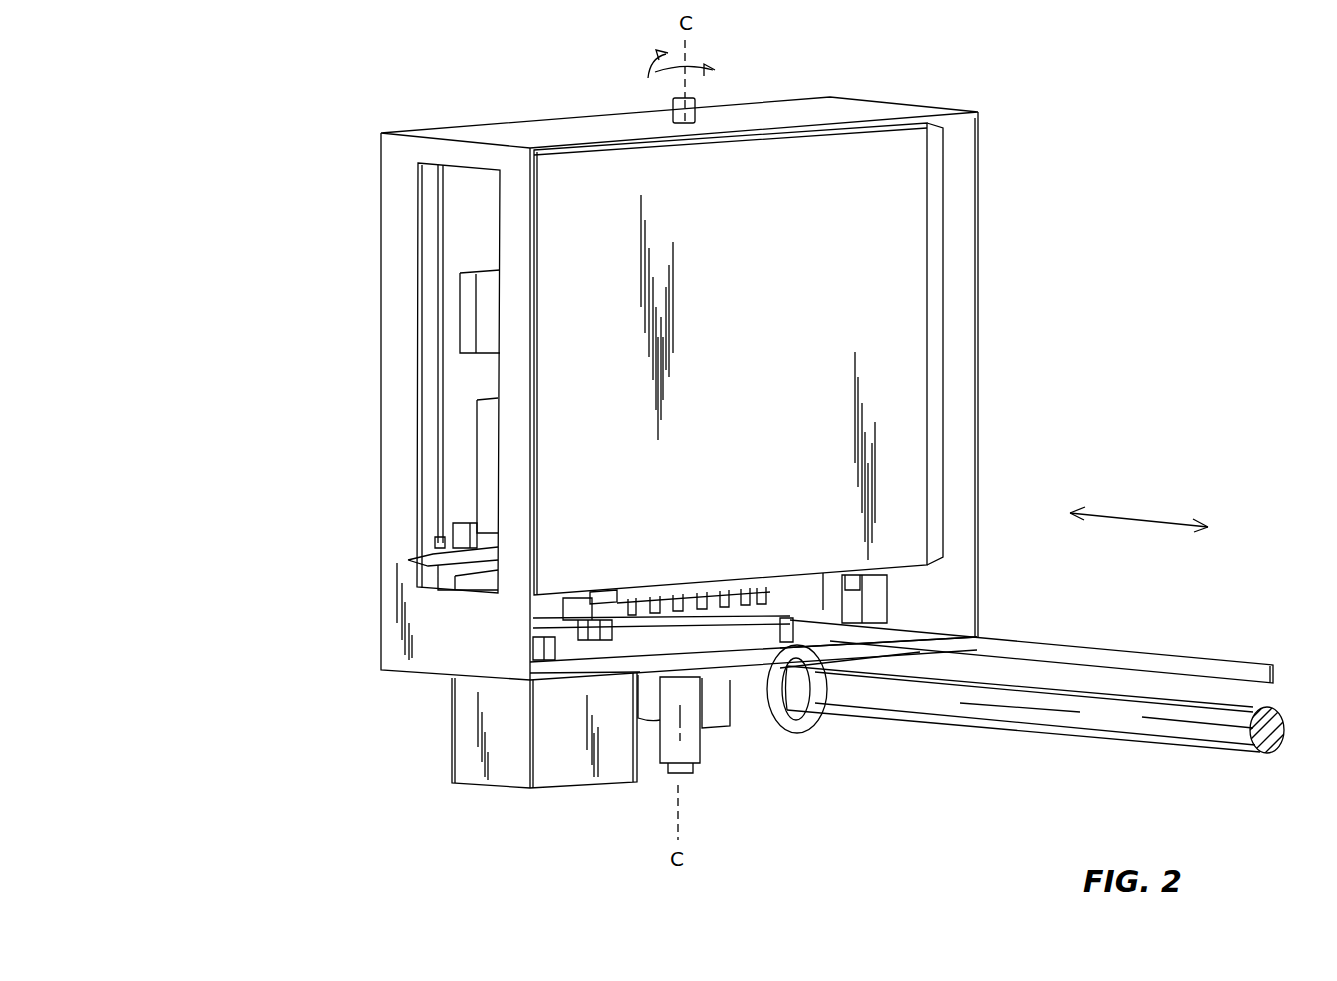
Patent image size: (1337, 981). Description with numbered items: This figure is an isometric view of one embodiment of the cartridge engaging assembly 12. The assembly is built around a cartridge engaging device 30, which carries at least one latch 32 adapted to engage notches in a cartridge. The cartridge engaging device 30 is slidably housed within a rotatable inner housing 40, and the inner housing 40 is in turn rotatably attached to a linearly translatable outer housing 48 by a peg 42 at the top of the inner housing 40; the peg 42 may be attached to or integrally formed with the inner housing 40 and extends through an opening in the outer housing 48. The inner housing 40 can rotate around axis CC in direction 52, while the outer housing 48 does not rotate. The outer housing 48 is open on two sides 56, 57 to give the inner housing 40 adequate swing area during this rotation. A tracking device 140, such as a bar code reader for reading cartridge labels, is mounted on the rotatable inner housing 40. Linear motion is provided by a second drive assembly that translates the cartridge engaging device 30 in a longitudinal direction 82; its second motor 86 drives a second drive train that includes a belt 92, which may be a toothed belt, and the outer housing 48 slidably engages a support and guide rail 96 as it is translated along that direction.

The cartridge engaging assembly 12 is at (283, 133).
The open side of outer housing 57 is at (425, 122).
The direction of rotation 52 is at (655, 70).
The peg 42 is at (696, 117).
The outer housing 48 is at (382, 217).
The open side of outer housing 56 is at (972, 218).
The tracking device 140 is at (466, 313).
The inner housing 40 is at (897, 300).
The cartridge engaging device 30 is at (470, 458).
The latch 32 is at (433, 543).
The longitudinal direction 82 is at (1140, 518).
The belt 92 is at (1152, 653).
The second motor 86 is at (452, 725).
The support and guide rail 96 is at (1030, 732).